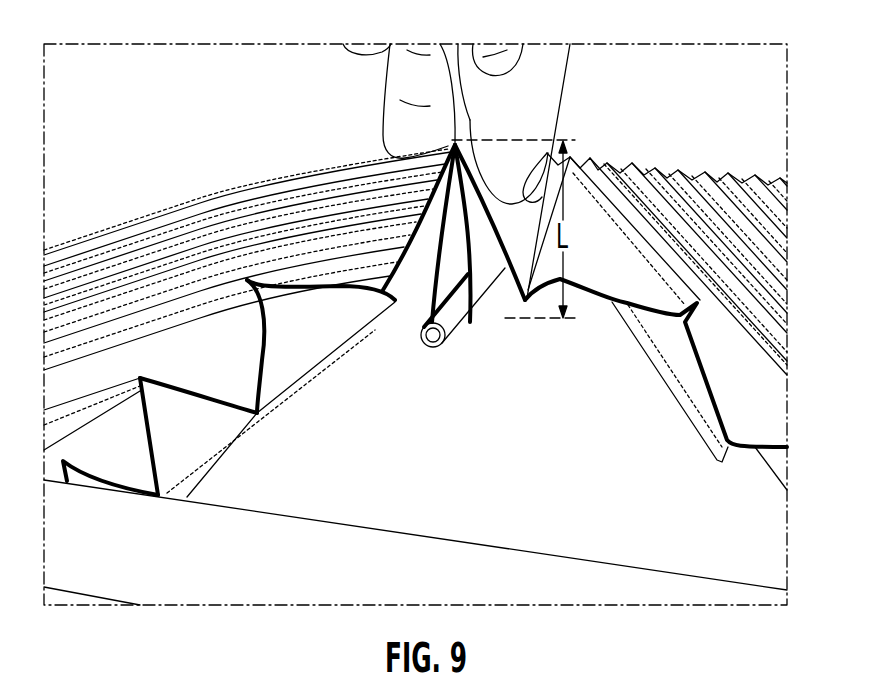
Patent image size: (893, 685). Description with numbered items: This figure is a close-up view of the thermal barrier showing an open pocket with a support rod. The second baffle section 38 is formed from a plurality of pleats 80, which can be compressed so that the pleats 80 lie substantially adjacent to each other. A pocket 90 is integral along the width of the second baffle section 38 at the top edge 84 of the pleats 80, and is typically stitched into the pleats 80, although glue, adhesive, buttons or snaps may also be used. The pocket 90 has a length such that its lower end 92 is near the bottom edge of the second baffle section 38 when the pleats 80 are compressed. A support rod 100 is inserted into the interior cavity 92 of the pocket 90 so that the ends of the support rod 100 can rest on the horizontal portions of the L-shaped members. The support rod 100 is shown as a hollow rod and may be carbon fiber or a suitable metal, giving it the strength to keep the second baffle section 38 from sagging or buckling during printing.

The second baffle section 38 is at (766, 229).
The pleats 80 is at (266, 277).
The top edge 84 is at (470, 125).
The pocket 90 is at (397, 298).
The interior cavity 92 is at (481, 266).
The support rod 100 is at (423, 330).